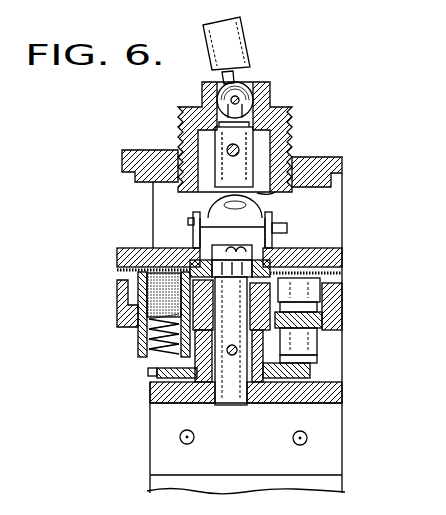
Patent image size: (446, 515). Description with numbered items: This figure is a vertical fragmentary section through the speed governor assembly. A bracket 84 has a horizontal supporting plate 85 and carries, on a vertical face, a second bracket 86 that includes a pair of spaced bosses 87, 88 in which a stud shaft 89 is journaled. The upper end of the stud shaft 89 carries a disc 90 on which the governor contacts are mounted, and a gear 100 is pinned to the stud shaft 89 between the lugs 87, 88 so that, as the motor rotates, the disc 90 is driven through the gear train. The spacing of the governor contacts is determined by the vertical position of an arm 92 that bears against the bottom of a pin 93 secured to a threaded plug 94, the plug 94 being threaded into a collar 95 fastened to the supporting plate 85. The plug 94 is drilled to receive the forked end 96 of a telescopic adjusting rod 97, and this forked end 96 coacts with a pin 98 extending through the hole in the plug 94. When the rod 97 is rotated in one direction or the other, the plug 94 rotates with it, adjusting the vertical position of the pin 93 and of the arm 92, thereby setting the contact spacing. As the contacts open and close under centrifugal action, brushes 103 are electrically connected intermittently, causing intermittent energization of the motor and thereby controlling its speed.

The bracket 84 is at (335, 226).
The horizontal supporting plate 85 is at (325, 153).
The bracket 86 is at (327, 443).
The boss 87 is at (335, 320).
The boss 88 is at (323, 393).
The stud shaft 89 is at (228, 388).
The disc 90 is at (137, 246).
The arm 92 is at (212, 203).
The pin 93 is at (262, 194).
The threaded plug 94 is at (270, 105).
The collar 95 is at (178, 123).
The forked end 96 is at (238, 88).
The adjusting rod 97 is at (238, 38).
The pin 98 is at (228, 98).
The gear 100 is at (148, 372).
The brushes 103 is at (117, 290).